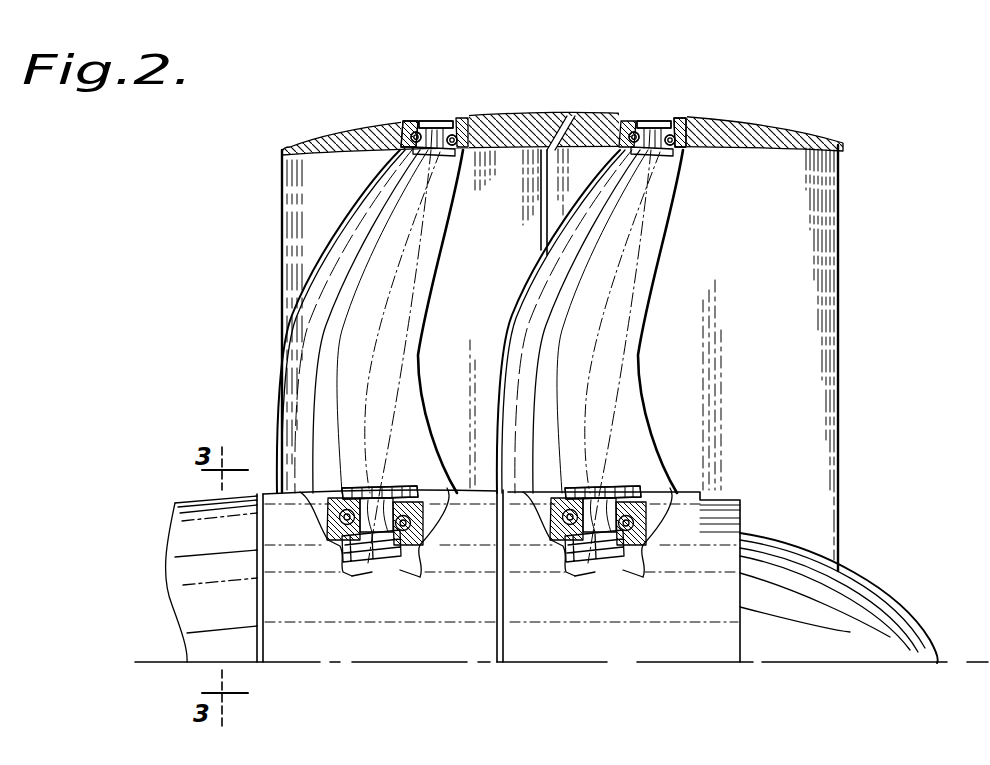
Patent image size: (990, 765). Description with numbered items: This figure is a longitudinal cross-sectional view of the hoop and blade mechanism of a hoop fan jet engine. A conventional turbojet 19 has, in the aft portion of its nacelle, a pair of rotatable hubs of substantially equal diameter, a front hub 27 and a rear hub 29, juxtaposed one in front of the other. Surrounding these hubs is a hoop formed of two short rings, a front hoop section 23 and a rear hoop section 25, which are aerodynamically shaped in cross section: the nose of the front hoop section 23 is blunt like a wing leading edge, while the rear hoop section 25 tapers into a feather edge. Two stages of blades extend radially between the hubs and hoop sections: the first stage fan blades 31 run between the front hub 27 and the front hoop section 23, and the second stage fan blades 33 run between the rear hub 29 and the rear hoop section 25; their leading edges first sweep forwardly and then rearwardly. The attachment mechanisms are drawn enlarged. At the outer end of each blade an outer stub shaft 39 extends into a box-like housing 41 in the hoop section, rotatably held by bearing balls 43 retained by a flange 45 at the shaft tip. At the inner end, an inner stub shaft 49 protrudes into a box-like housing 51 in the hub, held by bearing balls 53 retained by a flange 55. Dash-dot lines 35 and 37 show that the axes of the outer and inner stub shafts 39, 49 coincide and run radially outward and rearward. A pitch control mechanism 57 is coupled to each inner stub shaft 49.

The turbojet 19 is at (178, 537).
The front hoop section 23 is at (344, 134).
The rear hoop section 25 is at (586, 121).
The front rotatable hub 27 is at (393, 650).
The rear rotatable hub 29 is at (613, 648).
The first stage fan blades 31 is at (297, 354).
The second stage fan blades 33 is at (524, 338).
The dash-dot line 35 is at (415, 257).
The dash-dot line 37 is at (635, 257).
The outer stub shaft 39 is at (446, 133).
The box-like housing 41 is at (412, 128).
The bearing balls 43 is at (433, 122).
The flange 45 is at (440, 130).
The inner stub shaft 49 is at (388, 500).
The box-like housing 51 is at (428, 512).
The bearing balls 53 is at (417, 550).
The flange 55 is at (343, 533).
The pitch control mechanism 57 is at (357, 563).